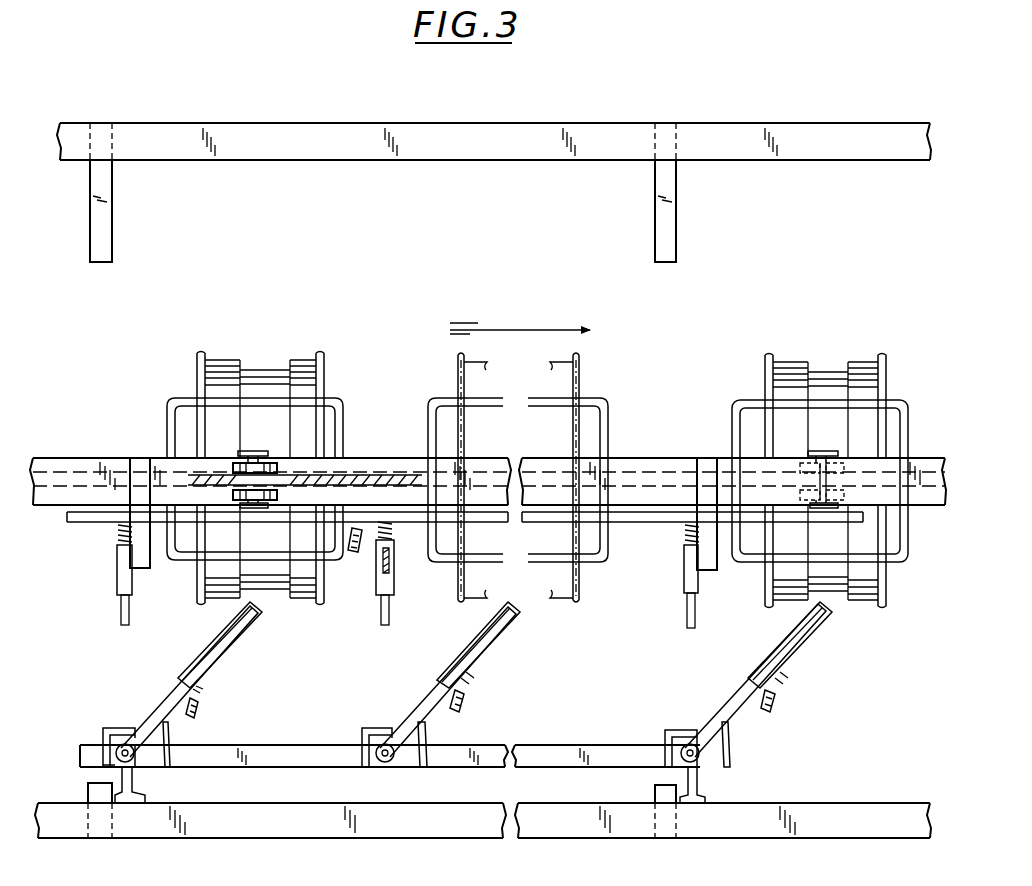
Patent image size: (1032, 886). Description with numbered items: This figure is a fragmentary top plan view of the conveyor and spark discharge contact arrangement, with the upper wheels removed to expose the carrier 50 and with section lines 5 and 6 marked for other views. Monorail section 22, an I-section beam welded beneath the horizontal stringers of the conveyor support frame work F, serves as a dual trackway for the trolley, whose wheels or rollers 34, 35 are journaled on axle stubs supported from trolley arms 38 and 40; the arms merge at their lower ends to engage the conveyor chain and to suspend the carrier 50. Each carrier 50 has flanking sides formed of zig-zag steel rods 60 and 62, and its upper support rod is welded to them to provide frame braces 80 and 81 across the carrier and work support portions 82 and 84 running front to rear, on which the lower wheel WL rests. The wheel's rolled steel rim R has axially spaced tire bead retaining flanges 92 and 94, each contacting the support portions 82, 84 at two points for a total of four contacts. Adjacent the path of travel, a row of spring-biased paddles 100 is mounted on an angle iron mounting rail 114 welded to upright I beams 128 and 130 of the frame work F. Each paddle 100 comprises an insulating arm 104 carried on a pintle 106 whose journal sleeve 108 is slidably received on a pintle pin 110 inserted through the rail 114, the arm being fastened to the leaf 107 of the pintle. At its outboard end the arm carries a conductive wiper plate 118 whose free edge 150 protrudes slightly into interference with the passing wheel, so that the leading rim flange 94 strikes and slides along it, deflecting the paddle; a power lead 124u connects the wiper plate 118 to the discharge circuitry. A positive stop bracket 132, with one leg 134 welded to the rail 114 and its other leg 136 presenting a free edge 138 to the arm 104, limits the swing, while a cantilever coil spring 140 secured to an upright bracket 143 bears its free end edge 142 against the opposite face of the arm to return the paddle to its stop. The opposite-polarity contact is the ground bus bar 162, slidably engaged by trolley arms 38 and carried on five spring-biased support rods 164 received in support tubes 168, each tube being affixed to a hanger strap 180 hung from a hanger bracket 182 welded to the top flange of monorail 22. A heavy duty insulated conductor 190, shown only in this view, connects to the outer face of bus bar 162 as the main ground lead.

The conveyor support frame work F is at (622, 122).
The monorail section 22 is at (70, 456).
The wheel or roller 35 is at (280, 465).
The trolley arm 40 is at (251, 451).
The trolley arm 38 is at (270, 508).
The wheel or roller 34 is at (280, 505).
The carrier 50 is at (340, 398).
The steel rod 62 is at (170, 410).
The steel rod 60 is at (174, 560).
The frame brace 80 is at (166, 436).
The frame brace 81 is at (344, 425).
The work support portion 82 is at (262, 402).
The work support portion 84 is at (283, 592).
The tire bead retaining flange 92 is at (197, 356).
The tire bead retaining flange 94 is at (318, 356).
The rim R is at (216, 358).
The lower wheel WL is at (258, 358).
The bus bar 162 is at (545, 526).
The support rod 164 is at (120, 530).
The support tube 168 is at (118, 600).
The hanger strap 180 is at (118, 562).
The hanger bracket 182 is at (120, 500).
The insulated electrical conductor 190 is at (360, 555).
The outboard free edge 150 is at (222, 628).
The wiper plate 118 is at (243, 630).
The paddle 100 is at (165, 700).
The insulating arm 104 is at (476, 672).
The paddle power lead 124u is at (205, 705).
The positive stop bracket 132 is at (103, 730).
The pintle pin 110 is at (116, 753).
The journal sleeve 108 is at (116, 766).
The leaf 107 is at (133, 730).
The pintle 106 is at (136, 768).
The angle iron mounting rail 114 is at (290, 768).
The upright I beam 128 is at (148, 805).
The upright I beam 130 is at (697, 788).
The leg 134 is at (362, 742).
The leg 136 is at (382, 728).
The free edge 138 is at (412, 726).
The coil spring 140 is at (172, 732).
The free end edge 142 is at (430, 718).
The upright bracket 143 is at (408, 770).
The section line 5 is at (383, 455).
The section line 6 is at (790, 598).